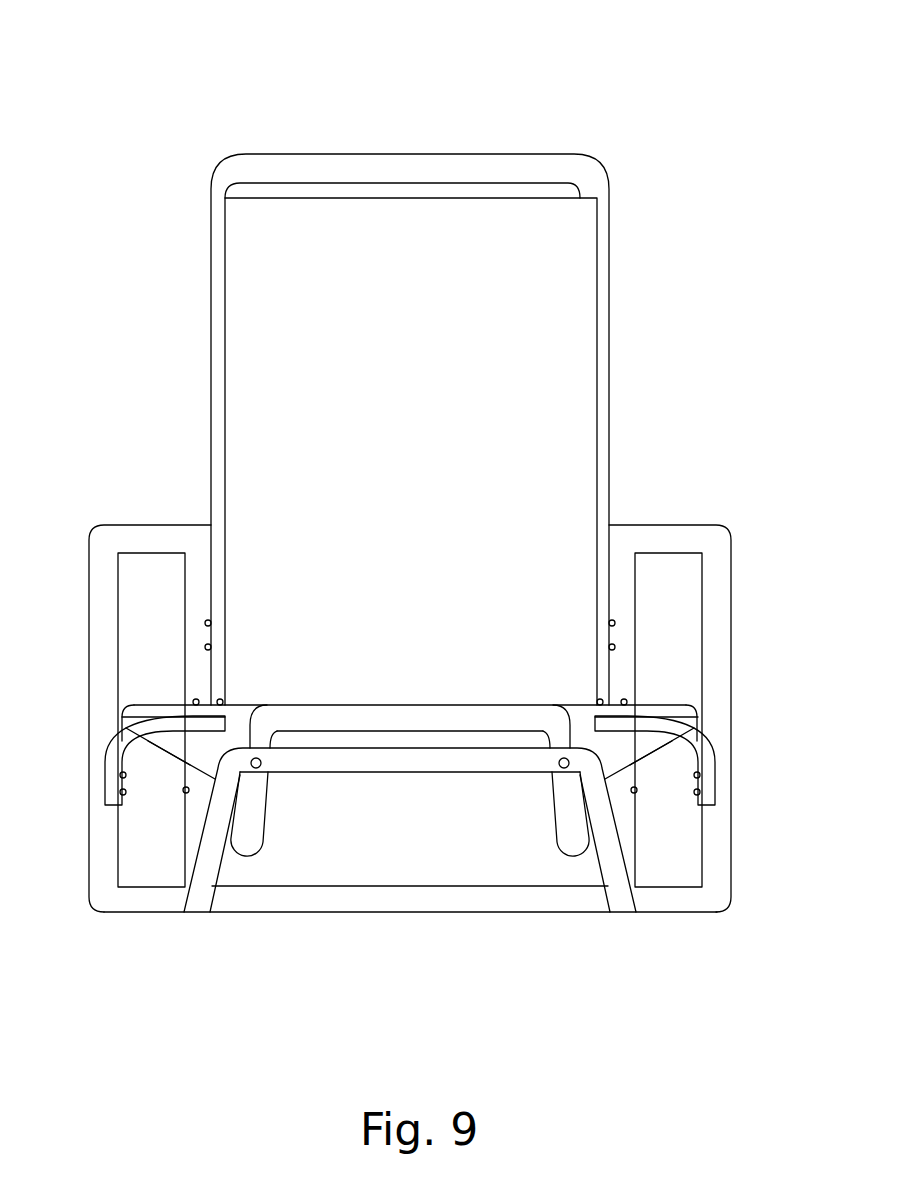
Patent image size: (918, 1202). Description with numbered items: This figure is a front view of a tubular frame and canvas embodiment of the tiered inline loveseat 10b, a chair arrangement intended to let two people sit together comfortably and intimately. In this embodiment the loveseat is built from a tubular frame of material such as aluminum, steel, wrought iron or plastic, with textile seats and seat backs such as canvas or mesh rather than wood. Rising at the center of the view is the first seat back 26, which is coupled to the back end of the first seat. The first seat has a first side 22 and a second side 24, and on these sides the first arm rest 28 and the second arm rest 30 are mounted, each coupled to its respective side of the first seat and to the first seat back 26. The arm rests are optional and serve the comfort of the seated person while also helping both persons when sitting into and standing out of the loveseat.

The tiered inline loveseat 10b is at (106, 127).
The first side 22 is at (623, 724).
The second side 24 is at (195, 724).
The first seat back 26 is at (255, 303).
The first arm rest 28 is at (665, 538).
The second arm rest 30 is at (127, 540).